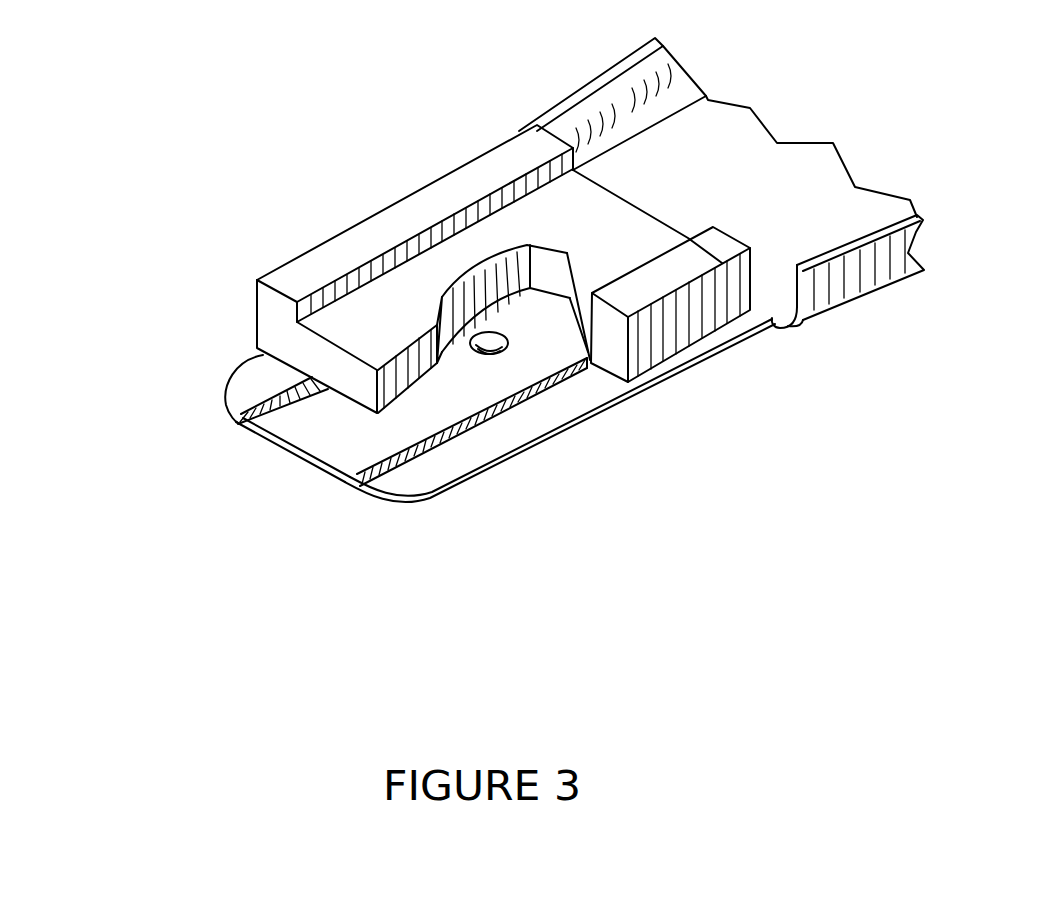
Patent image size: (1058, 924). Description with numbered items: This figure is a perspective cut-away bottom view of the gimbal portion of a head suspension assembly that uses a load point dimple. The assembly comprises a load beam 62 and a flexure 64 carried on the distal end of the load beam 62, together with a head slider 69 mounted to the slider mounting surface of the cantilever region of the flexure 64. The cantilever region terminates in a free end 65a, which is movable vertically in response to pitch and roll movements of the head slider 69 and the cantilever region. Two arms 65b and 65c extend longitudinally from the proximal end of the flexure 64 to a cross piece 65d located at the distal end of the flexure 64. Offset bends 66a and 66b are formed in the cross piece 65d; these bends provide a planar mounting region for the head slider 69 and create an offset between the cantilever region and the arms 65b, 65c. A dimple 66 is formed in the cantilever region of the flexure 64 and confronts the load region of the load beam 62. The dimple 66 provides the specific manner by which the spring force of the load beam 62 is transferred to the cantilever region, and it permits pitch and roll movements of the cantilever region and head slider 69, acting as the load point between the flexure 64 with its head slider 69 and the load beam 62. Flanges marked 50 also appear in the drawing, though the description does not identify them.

The bent flange of mounting plate 50 is at (652, 63).
The load beam 62 is at (857, 280).
The flexure 64 is at (777, 283).
The free end of the cantilever region 65a is at (547, 310).
The arm 65b is at (465, 468).
The arm 65c is at (262, 383).
The cross piece 65d is at (290, 430).
The dimple 66 is at (498, 355).
The offset bend 66a is at (357, 480).
The offset bend 66b is at (238, 420).
The head slider 69 is at (343, 247).